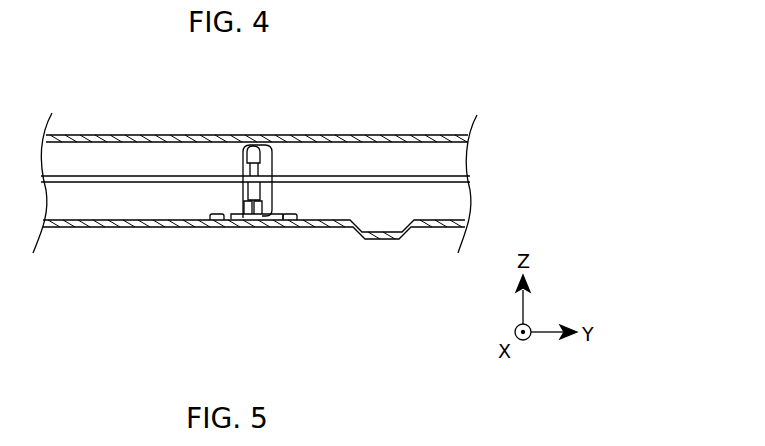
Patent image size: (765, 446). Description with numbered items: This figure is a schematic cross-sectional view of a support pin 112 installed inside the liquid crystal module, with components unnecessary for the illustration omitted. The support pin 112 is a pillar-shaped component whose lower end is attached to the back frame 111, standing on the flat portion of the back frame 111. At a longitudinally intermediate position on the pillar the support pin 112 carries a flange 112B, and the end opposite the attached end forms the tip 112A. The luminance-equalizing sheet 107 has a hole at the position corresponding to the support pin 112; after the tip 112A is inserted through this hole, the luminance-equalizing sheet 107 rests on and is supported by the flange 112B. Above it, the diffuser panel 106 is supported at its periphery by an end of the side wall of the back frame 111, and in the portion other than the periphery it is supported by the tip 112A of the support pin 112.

The diffuser panel 106 is at (133, 136).
The luminance-equalizing sheet 107 is at (408, 181).
The back frame 111 is at (130, 222).
The support pin 112 is at (244, 175).
The tip 112A is at (250, 146).
The flange 112B is at (274, 187).